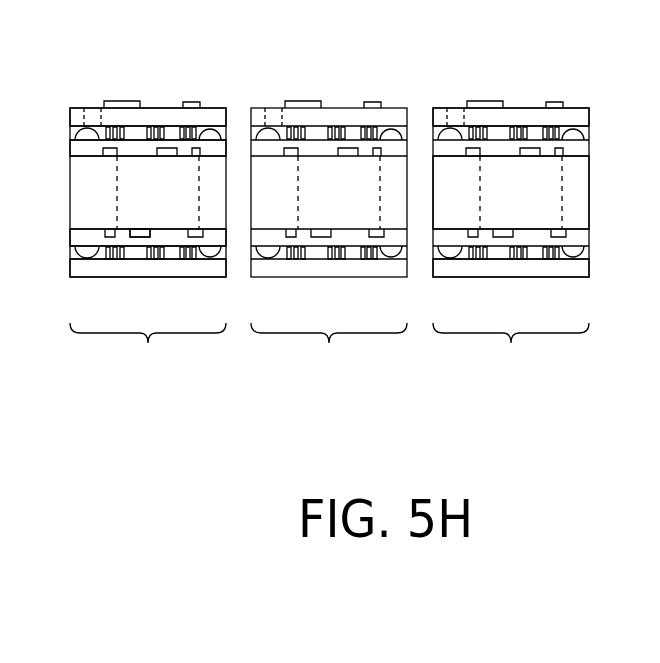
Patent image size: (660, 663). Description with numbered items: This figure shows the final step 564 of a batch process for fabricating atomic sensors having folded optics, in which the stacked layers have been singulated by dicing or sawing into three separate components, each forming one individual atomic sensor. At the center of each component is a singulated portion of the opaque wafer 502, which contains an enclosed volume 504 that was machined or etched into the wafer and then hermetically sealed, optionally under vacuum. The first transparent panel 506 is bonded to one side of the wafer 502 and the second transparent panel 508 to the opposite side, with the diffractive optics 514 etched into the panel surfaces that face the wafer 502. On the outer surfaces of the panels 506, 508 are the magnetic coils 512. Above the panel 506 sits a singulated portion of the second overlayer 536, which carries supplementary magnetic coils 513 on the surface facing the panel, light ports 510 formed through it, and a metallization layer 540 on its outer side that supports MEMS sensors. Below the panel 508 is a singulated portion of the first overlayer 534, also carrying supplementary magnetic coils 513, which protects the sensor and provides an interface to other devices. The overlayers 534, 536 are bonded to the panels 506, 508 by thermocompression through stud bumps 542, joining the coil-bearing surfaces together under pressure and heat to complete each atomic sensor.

The singulation and bonding step 564 is at (325, 190).
The second overlayer 536 is at (75, 122).
The metallization layer 540 is at (192, 105).
The magnetic coils 512 is at (363, 132).
The light ports 510 is at (450, 113).
The stud bumps 542 is at (580, 131).
The first transparent panel 506 is at (68, 147).
The diffractive optics 514 is at (135, 232).
The second transparent panel 508 is at (68, 237).
The supplementary magnetic coils 513 is at (193, 257).
The wafer 502 is at (590, 218).
The enclosed volume 504 is at (492, 218).
The first overlayer 534 is at (590, 265).